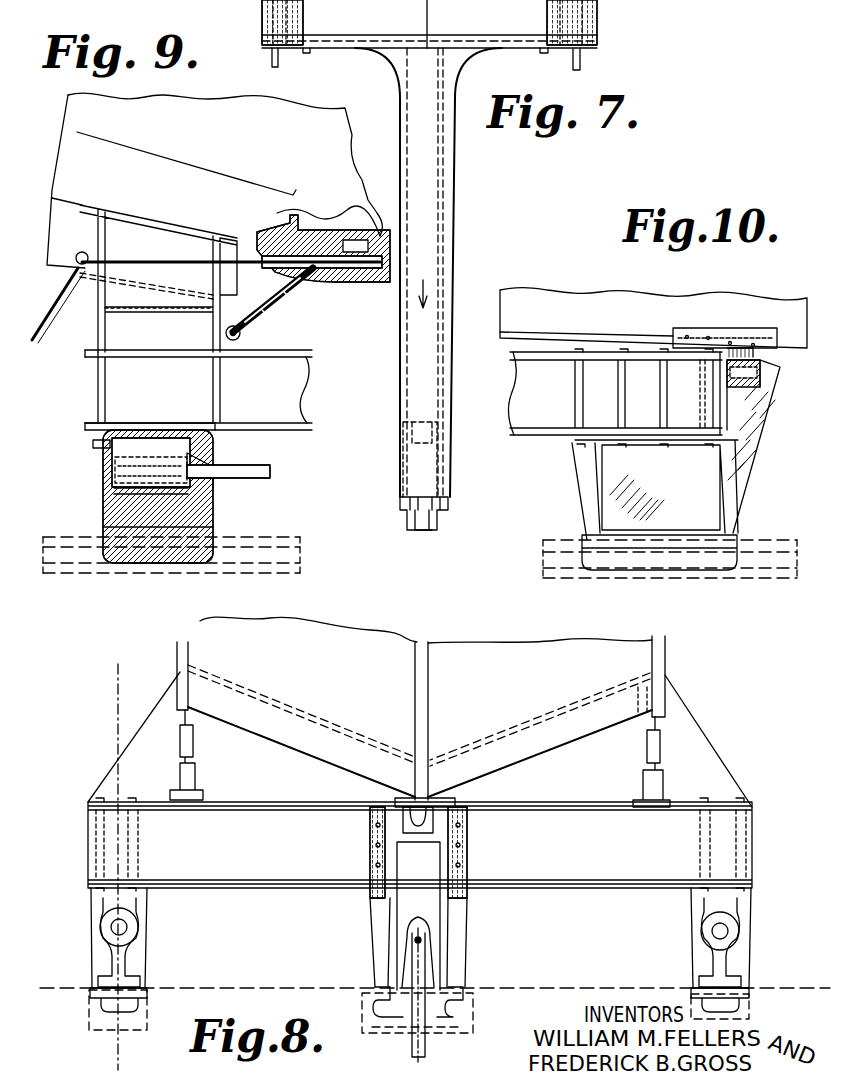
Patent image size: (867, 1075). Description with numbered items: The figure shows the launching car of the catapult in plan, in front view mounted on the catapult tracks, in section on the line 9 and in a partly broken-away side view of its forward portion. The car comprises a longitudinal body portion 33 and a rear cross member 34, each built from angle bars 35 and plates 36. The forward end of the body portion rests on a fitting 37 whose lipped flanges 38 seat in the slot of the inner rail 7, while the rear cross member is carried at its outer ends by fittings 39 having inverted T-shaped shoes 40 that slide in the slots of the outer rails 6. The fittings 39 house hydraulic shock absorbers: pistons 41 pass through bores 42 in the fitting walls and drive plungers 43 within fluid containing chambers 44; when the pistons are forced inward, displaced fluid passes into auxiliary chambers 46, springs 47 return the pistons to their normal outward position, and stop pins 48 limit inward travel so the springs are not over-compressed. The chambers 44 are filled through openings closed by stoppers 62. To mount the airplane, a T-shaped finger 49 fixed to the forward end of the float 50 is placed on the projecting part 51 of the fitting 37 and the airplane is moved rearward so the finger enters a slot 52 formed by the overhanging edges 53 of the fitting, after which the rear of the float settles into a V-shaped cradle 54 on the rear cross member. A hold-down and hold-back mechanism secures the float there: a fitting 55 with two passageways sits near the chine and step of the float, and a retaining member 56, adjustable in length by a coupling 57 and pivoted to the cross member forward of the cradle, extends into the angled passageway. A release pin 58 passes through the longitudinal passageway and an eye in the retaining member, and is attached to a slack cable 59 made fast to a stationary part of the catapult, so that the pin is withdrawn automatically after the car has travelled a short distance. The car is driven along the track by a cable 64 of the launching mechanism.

In FIG. 9, the outer rails 6 is at (287, 540).
In FIG. 8, the outer rails 6 is at (138, 1030).
In FIG. 10, the inner rail 7 is at (783, 550).
In FIG. 8, the inner rail 7 is at (463, 1030).
In FIG. 8, the fastening elements 9 is at (106, 1066).
In FIG. 7, the body portion 33 is at (453, 190).
In FIG. 9, the body portion 33 is at (281, 390).
In FIG. 10, the body portion 33 is at (615, 392).
In FIG. 9, the rear cross member 34 is at (198, 390).
In FIG. 7, the angle bars 35 is at (428, 238).
In FIG. 8, the angle bars 35 is at (290, 810).
In FIG. 7, the plates 36 is at (417, 338).
In FIG. 7, the fitting 37 is at (440, 513).
In FIG. 10, the fitting 37 is at (655, 490).
In FIG. 8, the fitting 37 is at (468, 920).
In FIG. 10, the lipped flanges 38 is at (697, 565).
In FIG. 8, the lipped flanges 38 is at (372, 1000).
In FIG. 9, the fittings 39 is at (110, 521).
In FIG. 9, the inverted T-shaped shoes 40 is at (147, 557).
In FIG. 8, the inverted T-shaped shoes 40 is at (130, 1000).
In FIG. 7, the pistons 41 is at (278, 58).
In FIG. 9, the pistons 41 is at (270, 472).
In FIG. 8, the pistons 41 is at (127, 927).
In FIG. 9, the bores 42 is at (205, 466).
In FIG. 9, the plungers 43 is at (212, 490).
In FIG. 9, the fluid containing chambers 44 is at (114, 458).
In FIG. 9, the auxiliary chambers 46 is at (103, 425).
In FIG. 9, the springs 47 is at (114, 492).
In FIG. 9, the stop pins 48 is at (116, 478).
In FIG. 10, the T-shaped finger 49 is at (775, 432).
In FIG. 8, the T-shaped finger 49 is at (443, 807).
In FIG. 9, the float 50 is at (214, 180).
In FIG. 10, the float 50 is at (653, 305).
In FIG. 8, the float 50 is at (421, 708).
In FIG. 7, the projecting part 51 is at (420, 530).
In FIG. 10, the projecting part 51 is at (752, 395).
In FIG. 8, the slot 52 is at (433, 830).
In FIG. 8, the overhanging edges 53 is at (372, 808).
In FIG. 8, the V-shaped cradle 54 is at (275, 742).
In FIG. 9, the fitting 55 is at (357, 216).
In FIG. 9, the retaining member 56 is at (240, 340).
In FIG. 9, the coupling 57 is at (300, 290).
In FIG. 8, the coupling 57 is at (180, 745).
In FIG. 9, the release pin 58 is at (170, 257).
In FIG. 9, the slack cable 59 is at (62, 322).
In FIG. 9, the stoppers 62 is at (93, 444).
In FIG. 8, the cable 64 is at (415, 938).